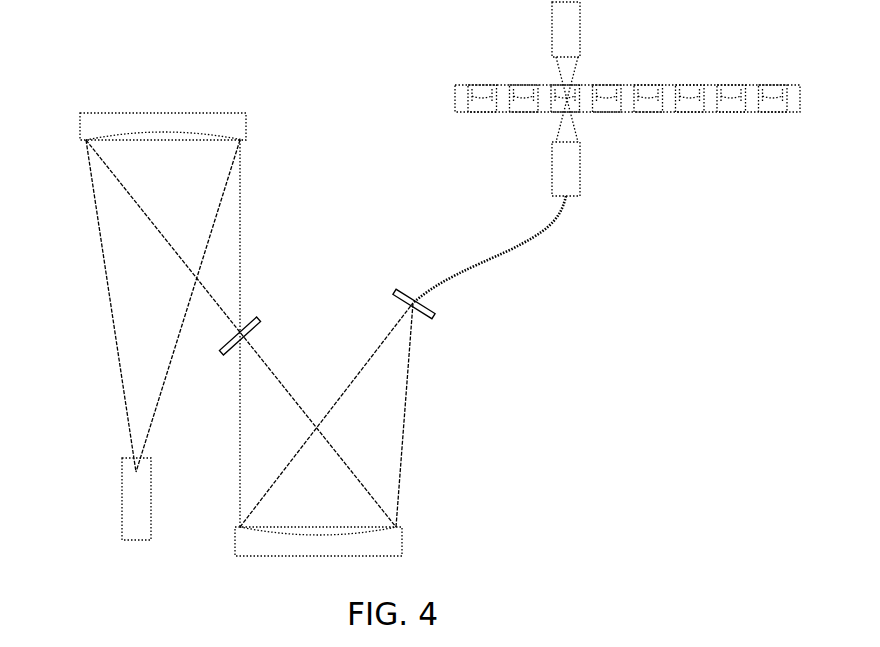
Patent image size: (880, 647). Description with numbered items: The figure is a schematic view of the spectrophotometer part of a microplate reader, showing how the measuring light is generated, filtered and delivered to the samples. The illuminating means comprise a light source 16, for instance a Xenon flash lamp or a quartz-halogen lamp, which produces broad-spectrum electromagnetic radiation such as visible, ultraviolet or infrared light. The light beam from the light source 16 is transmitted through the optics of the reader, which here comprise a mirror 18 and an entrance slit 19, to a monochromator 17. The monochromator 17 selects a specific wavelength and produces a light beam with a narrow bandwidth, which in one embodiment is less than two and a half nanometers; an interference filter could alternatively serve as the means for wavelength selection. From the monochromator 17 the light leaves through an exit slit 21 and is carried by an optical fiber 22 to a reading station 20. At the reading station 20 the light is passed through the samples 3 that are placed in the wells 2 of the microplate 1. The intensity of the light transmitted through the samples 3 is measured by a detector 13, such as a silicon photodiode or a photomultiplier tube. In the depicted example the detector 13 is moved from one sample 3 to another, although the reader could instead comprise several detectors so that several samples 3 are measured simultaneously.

The microplate 1 is at (455, 93).
The wells 2 is at (760, 90).
The samples 3 is at (773, 103).
The detector 13 is at (580, 40).
The light source 16 is at (122, 493).
The monochromator 17 is at (397, 531).
The mirror 18 is at (245, 127).
The entrance slit 19 is at (257, 322).
The reading station 20 is at (492, 137).
The exit slit 21 is at (436, 307).
The optical fiber 22 is at (530, 243).